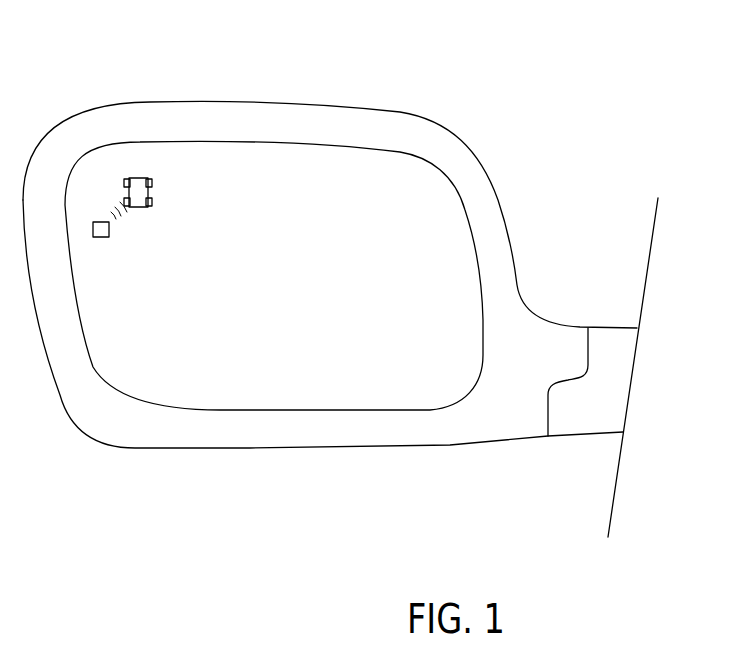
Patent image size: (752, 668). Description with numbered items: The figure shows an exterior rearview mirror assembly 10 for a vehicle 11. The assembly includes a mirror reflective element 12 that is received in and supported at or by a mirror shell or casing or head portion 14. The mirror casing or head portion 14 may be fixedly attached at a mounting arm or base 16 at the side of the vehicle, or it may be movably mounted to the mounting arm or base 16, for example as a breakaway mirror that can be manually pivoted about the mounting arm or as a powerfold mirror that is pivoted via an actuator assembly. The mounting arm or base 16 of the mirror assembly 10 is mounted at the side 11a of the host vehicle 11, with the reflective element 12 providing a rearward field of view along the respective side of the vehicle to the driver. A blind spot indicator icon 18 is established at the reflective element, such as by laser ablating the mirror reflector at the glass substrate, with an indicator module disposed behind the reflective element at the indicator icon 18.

The exterior rearview mirror assembly 10 is at (330, 264).
The vehicle 11 is at (634, 367).
The side of vehicle 11a is at (608, 507).
The mirror reflective element 12 is at (197, 440).
The mirror casing or head portion 14 is at (344, 360).
The mounting arm or base 16 is at (615, 340).
The blind spot indicator icon 18 is at (152, 195).